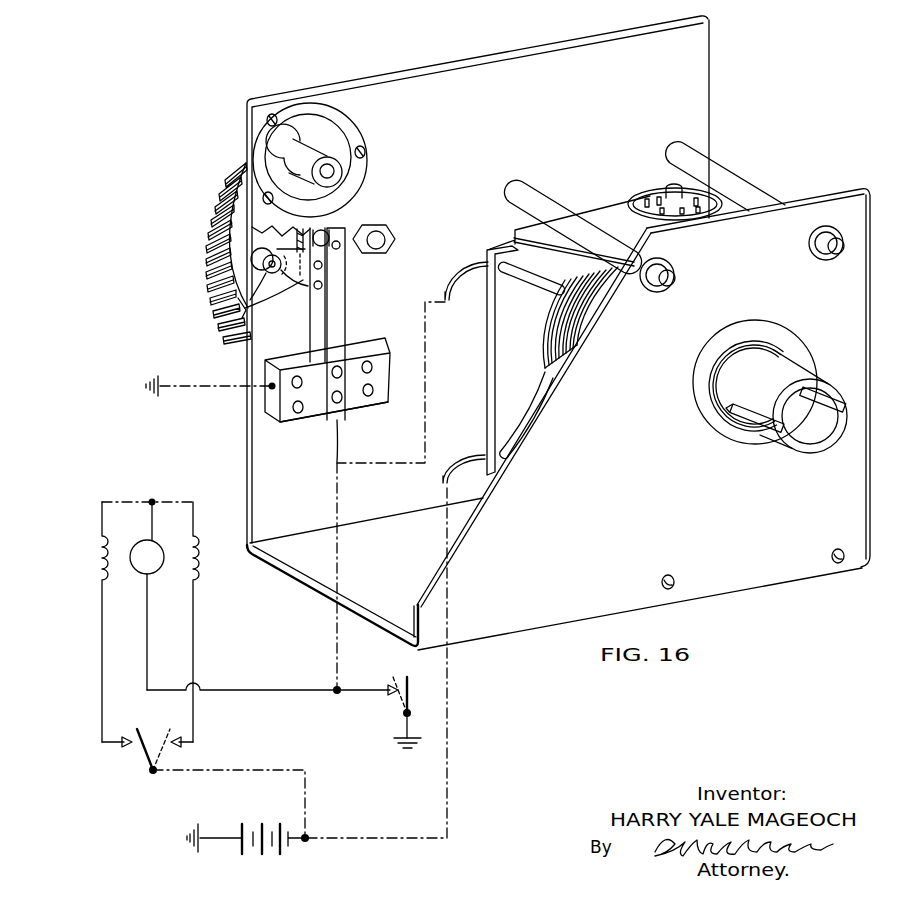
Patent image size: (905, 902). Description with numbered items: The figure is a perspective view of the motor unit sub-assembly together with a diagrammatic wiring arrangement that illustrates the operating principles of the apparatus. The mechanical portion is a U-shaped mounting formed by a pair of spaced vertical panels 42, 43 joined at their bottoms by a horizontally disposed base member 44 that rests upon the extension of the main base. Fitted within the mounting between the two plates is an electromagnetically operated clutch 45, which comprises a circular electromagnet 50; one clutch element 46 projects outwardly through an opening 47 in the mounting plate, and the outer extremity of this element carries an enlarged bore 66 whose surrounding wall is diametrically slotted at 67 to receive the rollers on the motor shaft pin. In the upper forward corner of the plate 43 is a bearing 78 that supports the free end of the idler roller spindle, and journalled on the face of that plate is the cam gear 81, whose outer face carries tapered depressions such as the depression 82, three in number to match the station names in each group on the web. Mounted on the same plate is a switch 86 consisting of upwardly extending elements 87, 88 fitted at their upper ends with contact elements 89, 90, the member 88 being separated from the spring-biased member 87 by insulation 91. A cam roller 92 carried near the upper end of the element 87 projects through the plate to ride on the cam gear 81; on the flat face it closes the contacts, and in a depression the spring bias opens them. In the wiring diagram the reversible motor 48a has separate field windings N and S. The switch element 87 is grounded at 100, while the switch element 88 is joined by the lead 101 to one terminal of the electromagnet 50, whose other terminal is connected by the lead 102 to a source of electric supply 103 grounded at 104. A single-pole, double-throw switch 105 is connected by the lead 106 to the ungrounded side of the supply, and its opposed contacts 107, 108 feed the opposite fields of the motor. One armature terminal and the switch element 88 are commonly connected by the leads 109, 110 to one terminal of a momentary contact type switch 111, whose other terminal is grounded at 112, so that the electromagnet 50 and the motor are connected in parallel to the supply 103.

The vertical panel 42 is at (772, 568).
The vertical panel 43 is at (413, 83).
The base member 44 is at (306, 563).
The electromagnetically operated clutch 45 is at (653, 218).
The clutch element 46 is at (781, 373).
The opening 47 is at (715, 395).
The motor 48a is at (153, 545).
The electromagnet 50 is at (570, 336).
The enlarged bore 66 is at (800, 416).
The slots 67 is at (823, 392).
The bearing 78 is at (310, 143).
The cam gear 81 is at (220, 178).
The depression 82 is at (265, 266).
The switch 86 is at (346, 348).
The switch element 87 is at (276, 300).
The switch element 88 is at (338, 299).
The contact element 89 is at (328, 232).
The contact element 90 is at (333, 240).
The insulation 91 is at (297, 410).
The cam roller 92 is at (223, 300).
The ground 100 is at (150, 383).
The lead 101 is at (427, 374).
The lead 102 is at (449, 585).
The source of electric supply 103 is at (284, 811).
The ground 104 is at (186, 834).
The single-pole, double-throw switch 105 is at (155, 740).
The lead 106 is at (279, 771).
The contact 107 is at (134, 745).
The contact 108 is at (176, 742).
The lead 109 is at (241, 690).
The lead 110 is at (339, 494).
The momentary contact type switch 111 is at (409, 678).
The ground 112 is at (398, 750).